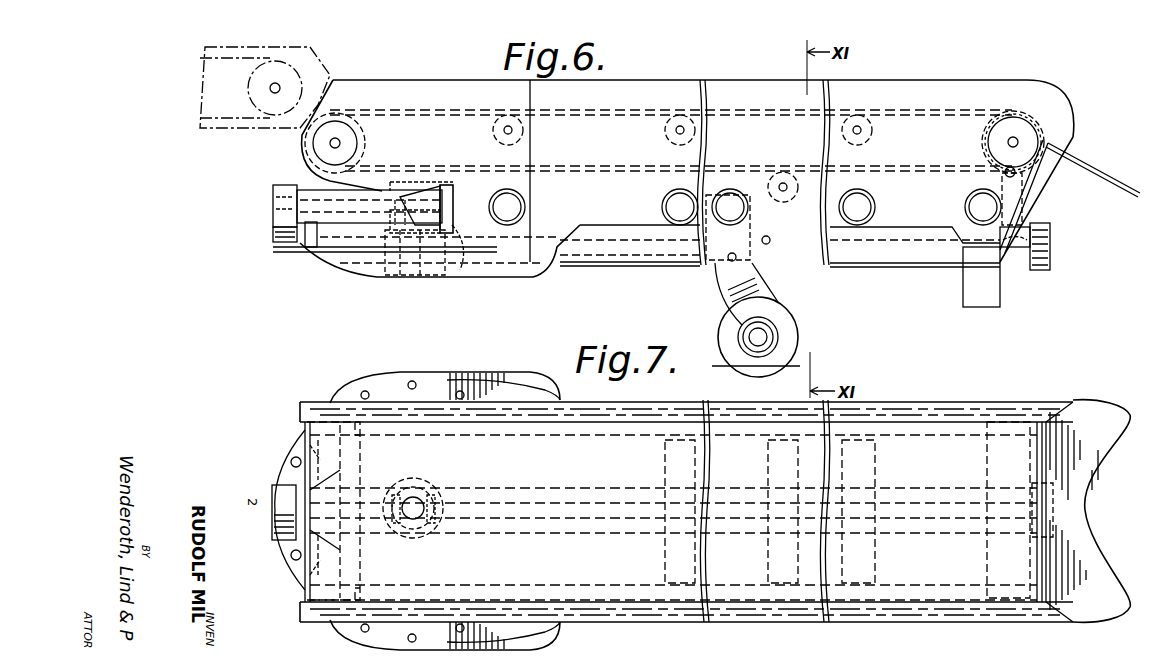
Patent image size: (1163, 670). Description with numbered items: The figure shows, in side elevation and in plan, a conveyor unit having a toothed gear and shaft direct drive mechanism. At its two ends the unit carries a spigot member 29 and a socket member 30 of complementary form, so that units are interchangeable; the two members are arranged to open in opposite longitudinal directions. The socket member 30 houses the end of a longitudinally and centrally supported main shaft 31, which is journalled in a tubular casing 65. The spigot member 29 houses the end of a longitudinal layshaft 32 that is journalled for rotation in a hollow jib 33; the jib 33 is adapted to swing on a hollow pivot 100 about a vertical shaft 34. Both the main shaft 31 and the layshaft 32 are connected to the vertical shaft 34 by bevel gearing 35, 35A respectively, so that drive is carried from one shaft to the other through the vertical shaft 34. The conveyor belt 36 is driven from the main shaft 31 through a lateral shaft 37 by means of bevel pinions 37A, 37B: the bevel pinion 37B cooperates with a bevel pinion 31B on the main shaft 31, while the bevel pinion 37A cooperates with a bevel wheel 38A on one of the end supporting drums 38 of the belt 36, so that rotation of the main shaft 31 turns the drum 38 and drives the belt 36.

In FIG. 6, the spigot member 29 is at (272, 206).
In FIG. 7, the spigot member 29 is at (272, 505).
In FIG. 6, the socket member 30 is at (1050, 250).
In FIG. 7, the socket member 30 is at (1075, 508).
In FIG. 6, the main shaft 31 is at (541, 259).
In FIG. 7, the main shaft 31 is at (612, 523).
In FIG. 6, the bevel pinion 31B is at (1003, 262).
In FIG. 6, the layshaft 32 is at (318, 185).
In FIG. 7, the layshaft 32 is at (345, 495).
In FIG. 6, the hollow jib 33 is at (320, 248).
In FIG. 7, the hollow jib 33 is at (290, 458).
In FIG. 6, the vertical shaft 34 is at (400, 245).
In FIG. 7, the vertical shaft 34 is at (416, 523).
In FIG. 6, the bevel gearing 35 is at (432, 240).
In FIG. 7, the bevel gearing 35 is at (438, 502).
In FIG. 6, the bevel gearing 35A is at (425, 196).
In FIG. 7, the bevel gearing 35A is at (412, 492).
In FIG. 6, the conveyor belt 36 is at (620, 112).
In FIG. 7, the conveyor belt 36 is at (597, 632).
In FIG. 6, the lateral shaft 37 is at (1035, 198).
In FIG. 6, the bevel pinion 37A is at (1003, 176).
In FIG. 6, the bevel pinion 37B is at (1036, 221).
In FIG. 6, the end supporting drum 38 is at (358, 140).
In FIG. 6, the bevel wheel 38A is at (985, 150).
In FIG. 6, the tubular casing 65 is at (660, 268).
In FIG. 6, the hollow pivot 100 is at (450, 240).